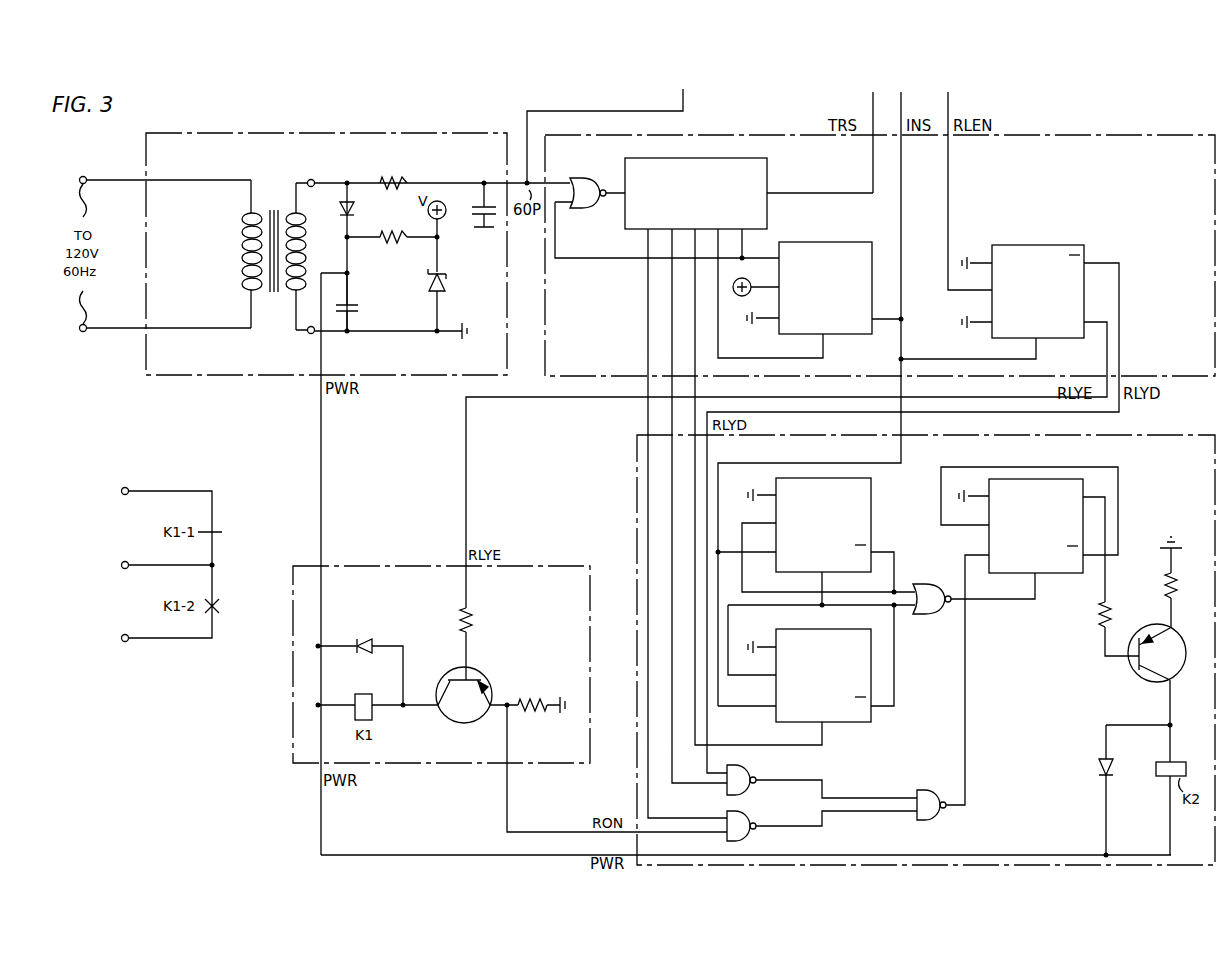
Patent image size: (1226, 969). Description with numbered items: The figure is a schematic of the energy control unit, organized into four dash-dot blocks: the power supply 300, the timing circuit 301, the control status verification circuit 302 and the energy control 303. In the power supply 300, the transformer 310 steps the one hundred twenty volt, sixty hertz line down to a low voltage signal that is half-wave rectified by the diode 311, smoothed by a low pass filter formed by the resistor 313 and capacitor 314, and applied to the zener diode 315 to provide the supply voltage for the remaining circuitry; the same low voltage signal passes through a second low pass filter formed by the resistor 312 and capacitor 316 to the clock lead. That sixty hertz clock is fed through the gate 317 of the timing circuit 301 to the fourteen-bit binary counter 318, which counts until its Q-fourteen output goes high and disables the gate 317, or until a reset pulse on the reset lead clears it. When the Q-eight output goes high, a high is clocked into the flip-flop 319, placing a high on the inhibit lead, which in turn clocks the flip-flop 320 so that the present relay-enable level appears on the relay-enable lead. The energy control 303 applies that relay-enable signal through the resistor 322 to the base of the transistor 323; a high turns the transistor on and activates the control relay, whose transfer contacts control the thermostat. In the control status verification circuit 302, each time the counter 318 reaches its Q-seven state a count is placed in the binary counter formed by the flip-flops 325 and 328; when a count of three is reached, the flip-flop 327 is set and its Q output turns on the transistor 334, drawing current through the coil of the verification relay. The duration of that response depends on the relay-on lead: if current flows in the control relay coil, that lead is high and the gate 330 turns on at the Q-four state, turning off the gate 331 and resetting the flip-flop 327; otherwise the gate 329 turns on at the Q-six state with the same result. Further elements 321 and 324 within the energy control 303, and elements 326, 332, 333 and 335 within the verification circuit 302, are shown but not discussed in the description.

The power supply 300 is at (331, 155).
The timing circuit 301 is at (1127, 185).
The control status verification circuit 302 is at (1192, 478).
The energy control circuit 303 is at (540, 630).
The transformer 310 is at (274, 207).
The diode 311 is at (356, 209).
The resistor 312 is at (393, 176).
The resistor 313 is at (394, 244).
The capacitor 314 is at (359, 309).
The zener diode 315 is at (449, 284).
The capacitor 316 is at (476, 218).
The gate 317 is at (589, 209).
The 14-bit binary counter 318 is at (770, 181).
The flip-flop 319 is at (812, 242).
The flip-flop 320 is at (1028, 245).
The diode 321 is at (362, 636).
The resistor 322 is at (458, 622).
The transistor 323 is at (492, 684).
The resistor 324 is at (531, 712).
The flip-flop 325 is at (872, 520).
The NOR gate 326 is at (935, 584).
The flip-flop 327 is at (1064, 573).
The flip-flop 328 is at (853, 722).
The gate 329 is at (747, 789).
The gate 330 is at (747, 832).
The gate 331 is at (940, 820).
The resistor 332 is at (1098, 621).
The resistor 333 is at (1178, 589).
The transistor 334 is at (1133, 669).
The diode 335 is at (1095, 767).